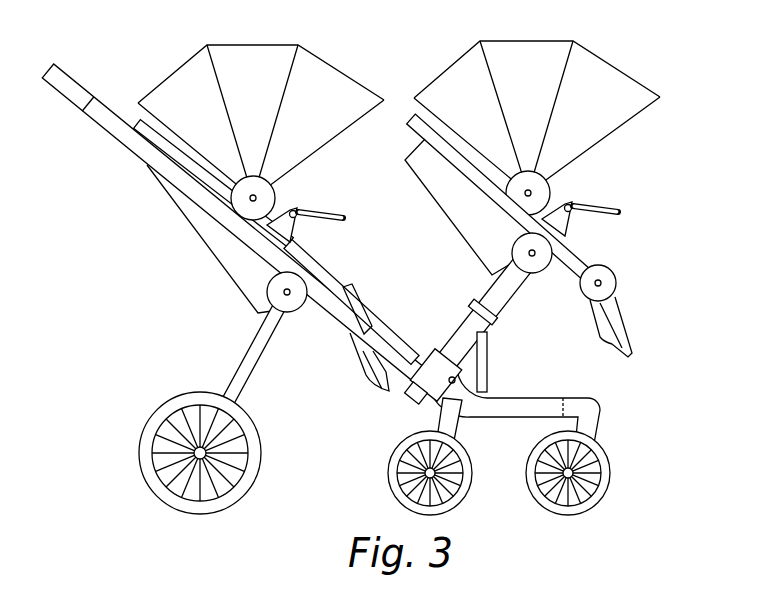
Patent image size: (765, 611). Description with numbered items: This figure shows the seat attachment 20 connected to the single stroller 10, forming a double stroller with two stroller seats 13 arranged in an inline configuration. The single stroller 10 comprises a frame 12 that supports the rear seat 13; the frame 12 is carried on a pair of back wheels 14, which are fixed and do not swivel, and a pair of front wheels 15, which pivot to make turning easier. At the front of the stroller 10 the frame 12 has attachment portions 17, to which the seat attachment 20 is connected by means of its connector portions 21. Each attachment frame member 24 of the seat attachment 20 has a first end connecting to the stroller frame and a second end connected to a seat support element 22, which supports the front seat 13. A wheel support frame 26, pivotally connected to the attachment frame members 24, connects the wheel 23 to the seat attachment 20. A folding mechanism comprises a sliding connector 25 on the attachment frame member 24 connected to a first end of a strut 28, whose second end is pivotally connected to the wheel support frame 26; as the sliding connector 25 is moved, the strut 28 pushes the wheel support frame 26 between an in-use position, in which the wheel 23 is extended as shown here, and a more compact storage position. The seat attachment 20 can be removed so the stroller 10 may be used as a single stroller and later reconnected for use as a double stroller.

The single stroller 10 is at (120, 70).
The frame 12 is at (130, 148).
The seat 13 is at (230, 272).
The back wheels 14 is at (202, 392).
The front wheels 15 is at (389, 471).
The attachment portions 17 is at (428, 412).
The seat attachment 20 is at (518, 378).
The connector portions 21 is at (410, 392).
The seat support elements 22 is at (548, 262).
The wheel 23 is at (610, 488).
The attachment frame member 24 is at (443, 343).
The sliding connector 25 is at (492, 307).
The wheel support frame 26 is at (560, 410).
The strut 28 is at (490, 347).